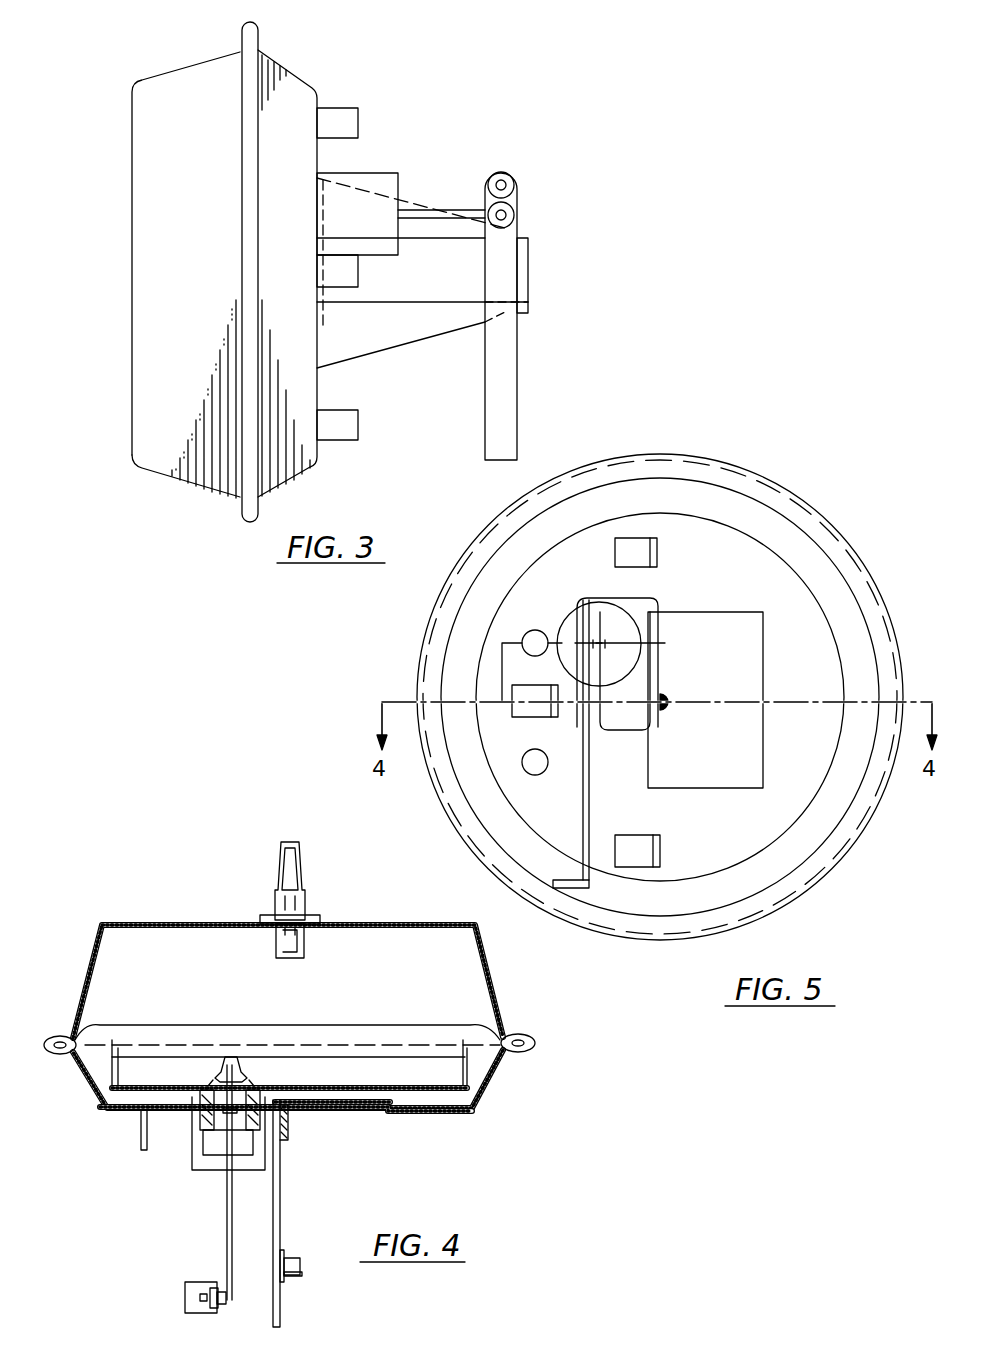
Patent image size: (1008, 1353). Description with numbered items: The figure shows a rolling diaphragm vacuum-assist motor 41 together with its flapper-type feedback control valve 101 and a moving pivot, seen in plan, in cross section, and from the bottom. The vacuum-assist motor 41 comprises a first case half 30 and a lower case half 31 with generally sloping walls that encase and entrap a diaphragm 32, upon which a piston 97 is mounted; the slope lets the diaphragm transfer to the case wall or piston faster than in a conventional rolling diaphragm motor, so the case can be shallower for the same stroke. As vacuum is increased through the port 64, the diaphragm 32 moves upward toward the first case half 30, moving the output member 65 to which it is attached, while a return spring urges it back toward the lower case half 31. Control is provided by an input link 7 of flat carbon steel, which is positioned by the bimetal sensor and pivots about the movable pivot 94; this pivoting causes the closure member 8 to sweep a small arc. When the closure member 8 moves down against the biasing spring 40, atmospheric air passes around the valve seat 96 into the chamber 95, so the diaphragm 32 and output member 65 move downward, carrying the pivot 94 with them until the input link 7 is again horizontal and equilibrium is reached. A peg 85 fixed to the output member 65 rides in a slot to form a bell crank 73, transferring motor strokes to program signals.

In FIG. 3, the input link 7 is at (507, 372).
In FIG. 5, the input link 7 is at (589, 782).
In FIG. 4, the input link 7 is at (192, 1298).
In FIG. 3, the closure member 8 is at (447, 210).
In FIG. 4, the closure member 8 is at (226, 1215).
In FIG. 3, the first case half 30 is at (194, 66).
In FIG. 4, the first case half 30 is at (495, 976).
In FIG. 3, the lower case half 31 is at (292, 68).
In FIG. 5, the lower case half 31 is at (750, 507).
In FIG. 4, the lower case half 31 is at (490, 1086).
In FIG. 4, the diaphragm 32 is at (470, 1062).
In FIG. 4, the biasing spring 40 is at (240, 1078).
In FIG. 3, the vacuum-assist motor 41 is at (183, 478).
In FIG. 5, the vacuum-assist motor 41 is at (870, 839).
In FIG. 4, the vacuum-assist motor 41 is at (350, 922).
In FIG. 4, the port 64 is at (288, 832).
In FIG. 4, the output member 65 is at (282, 1198).
In FIG. 4, the bell crank 73 is at (302, 1278).
In FIG. 4, the peg 85 is at (296, 1262).
In FIG. 3, the movable pivot 94 is at (512, 178).
In FIG. 5, the movable pivot 94 is at (583, 604).
In FIG. 4, the chamber 95 is at (228, 976).
In FIG. 4, the valve seat 96 is at (210, 1148).
In FIG. 4, the piston 97 is at (122, 1060).
In FIG. 4, the feedback control valve of the flapper type 101 is at (255, 1106).